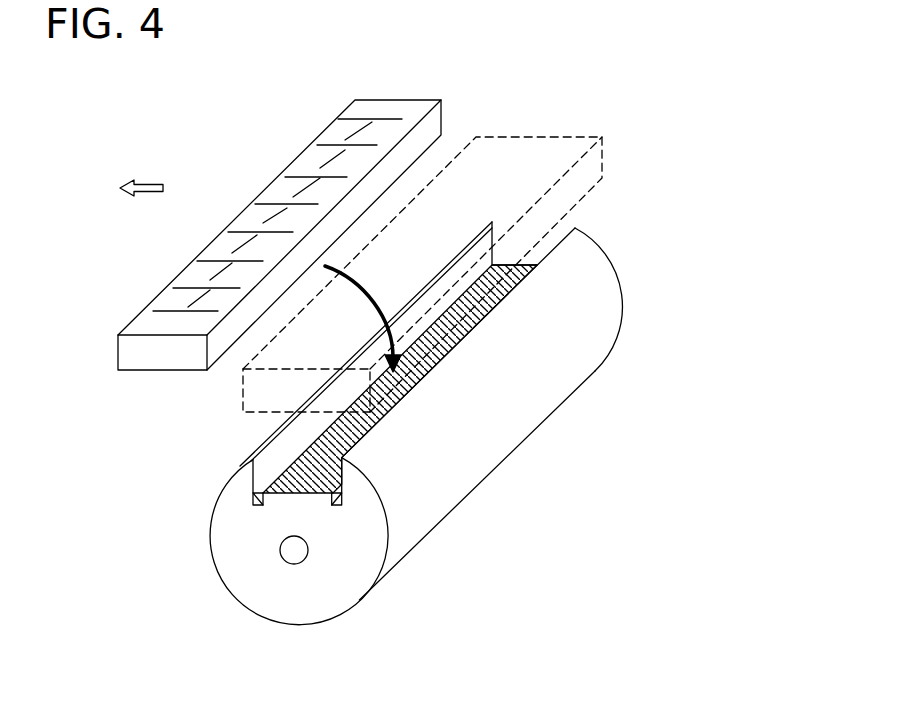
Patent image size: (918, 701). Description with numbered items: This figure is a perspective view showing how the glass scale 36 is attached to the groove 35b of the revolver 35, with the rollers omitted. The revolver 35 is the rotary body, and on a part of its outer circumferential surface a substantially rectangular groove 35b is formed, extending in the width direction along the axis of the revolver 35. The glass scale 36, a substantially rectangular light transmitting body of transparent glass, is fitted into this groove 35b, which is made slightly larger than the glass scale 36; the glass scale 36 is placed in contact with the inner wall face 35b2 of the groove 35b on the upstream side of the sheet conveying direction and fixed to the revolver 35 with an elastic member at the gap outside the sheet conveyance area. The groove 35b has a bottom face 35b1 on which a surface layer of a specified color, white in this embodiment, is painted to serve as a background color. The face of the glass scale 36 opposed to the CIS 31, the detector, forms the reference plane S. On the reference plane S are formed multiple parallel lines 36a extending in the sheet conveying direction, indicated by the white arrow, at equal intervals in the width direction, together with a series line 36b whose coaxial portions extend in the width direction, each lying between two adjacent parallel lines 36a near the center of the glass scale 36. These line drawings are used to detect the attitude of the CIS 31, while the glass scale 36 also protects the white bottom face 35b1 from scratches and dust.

The reference plane S is at (382, 106).
The CIS 31 is at (510, 143).
The glass scale 36 is at (245, 194).
The parallel lines 36a is at (320, 141).
The series line 36b is at (328, 165).
The revolver 35 is at (528, 444).
The groove 35b is at (352, 338).
The bottom face 35b1 is at (345, 430).
The inner wall face 35b2 is at (280, 452).